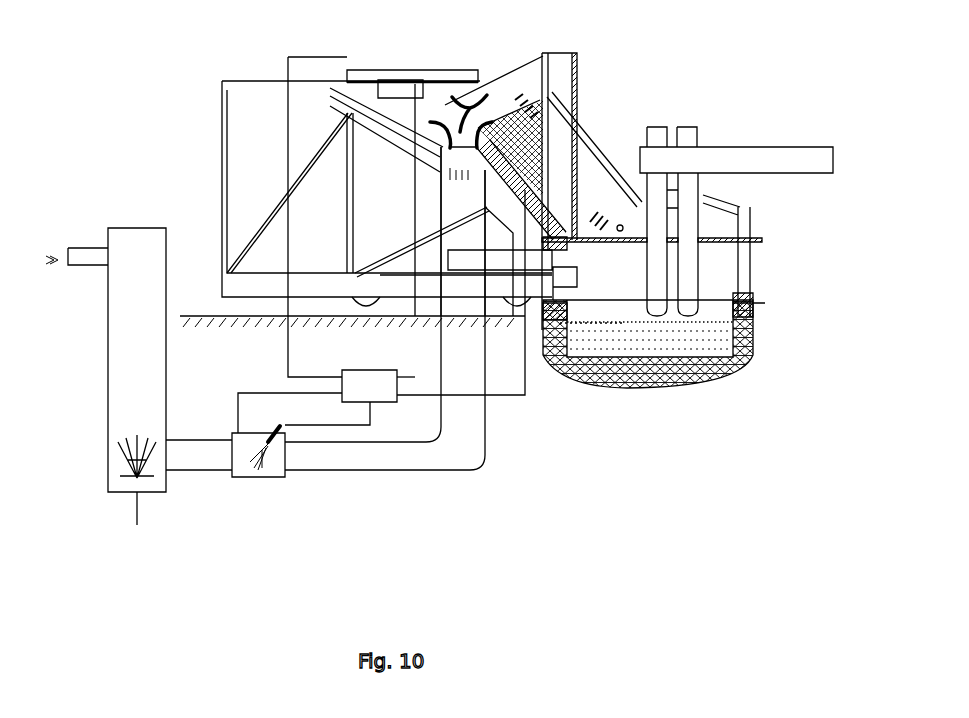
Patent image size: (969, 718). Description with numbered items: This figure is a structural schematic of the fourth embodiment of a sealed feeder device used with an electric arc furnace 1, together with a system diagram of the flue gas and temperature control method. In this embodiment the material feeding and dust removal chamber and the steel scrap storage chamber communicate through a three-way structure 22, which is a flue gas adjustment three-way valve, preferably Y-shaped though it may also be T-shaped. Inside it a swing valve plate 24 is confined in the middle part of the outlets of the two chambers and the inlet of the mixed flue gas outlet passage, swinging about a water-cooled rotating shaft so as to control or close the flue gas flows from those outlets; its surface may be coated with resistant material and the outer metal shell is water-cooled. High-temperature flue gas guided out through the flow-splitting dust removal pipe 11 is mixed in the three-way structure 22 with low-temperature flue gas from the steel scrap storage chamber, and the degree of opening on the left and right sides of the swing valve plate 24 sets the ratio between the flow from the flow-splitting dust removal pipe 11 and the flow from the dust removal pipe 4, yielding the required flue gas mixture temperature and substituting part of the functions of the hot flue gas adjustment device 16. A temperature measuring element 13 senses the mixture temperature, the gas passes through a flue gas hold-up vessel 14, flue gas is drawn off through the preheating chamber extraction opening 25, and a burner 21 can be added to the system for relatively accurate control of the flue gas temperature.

The electric arc furnace 1 is at (670, 158).
The dust removal pipe 4 is at (562, 70).
The flow-splitting dust removal pipe 11 is at (428, 95).
The temperature measuring element 13 is at (402, 88).
The flue gas hold-up vessel 14 is at (246, 478).
The hot flue gas adjustment device 16 is at (122, 362).
The burner 21 is at (276, 445).
The three-way structure 22 is at (463, 103).
The swing valve plate 24 is at (458, 117).
The preheating chamber extraction opening 25 is at (383, 90).